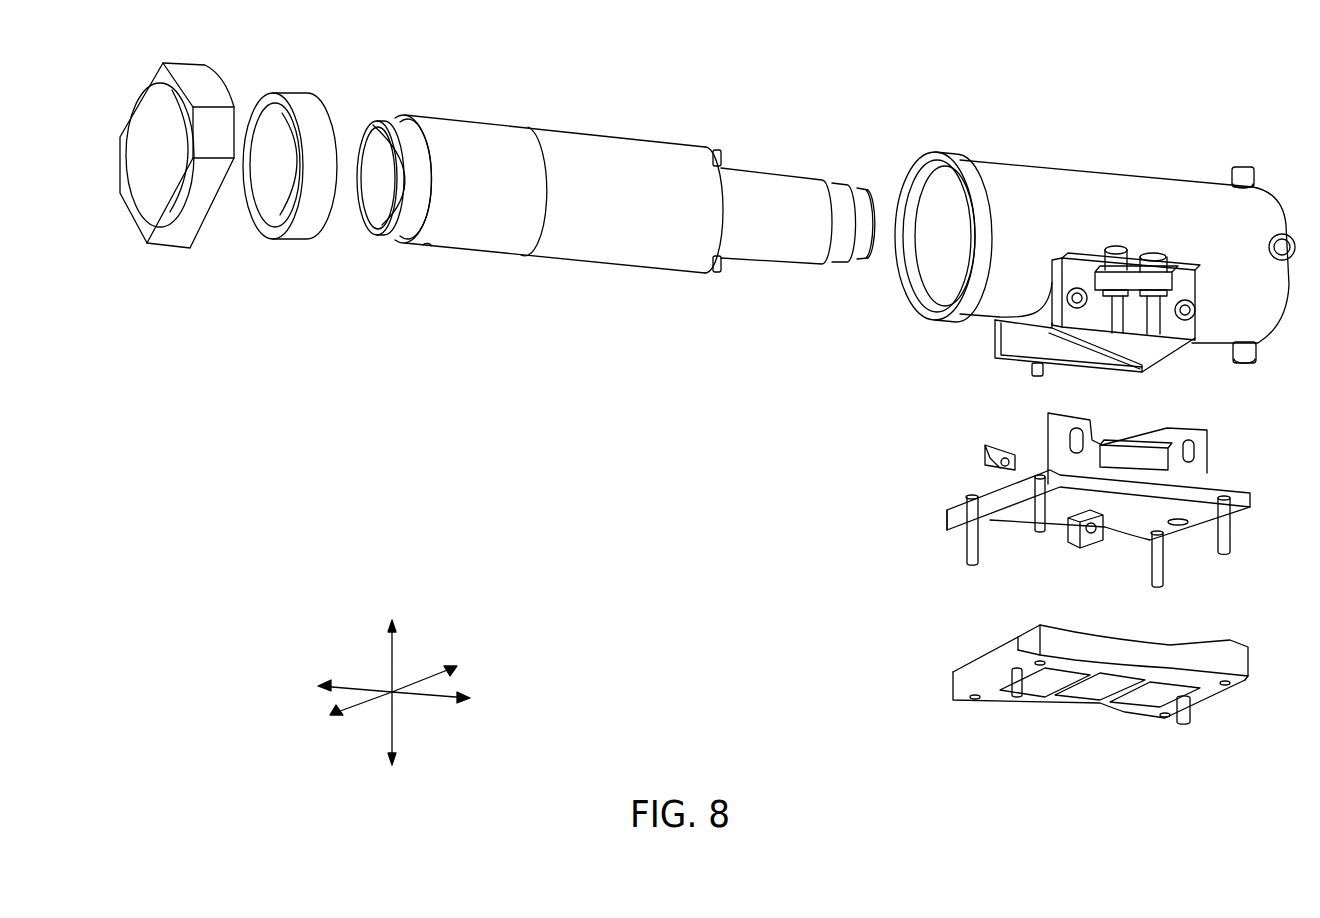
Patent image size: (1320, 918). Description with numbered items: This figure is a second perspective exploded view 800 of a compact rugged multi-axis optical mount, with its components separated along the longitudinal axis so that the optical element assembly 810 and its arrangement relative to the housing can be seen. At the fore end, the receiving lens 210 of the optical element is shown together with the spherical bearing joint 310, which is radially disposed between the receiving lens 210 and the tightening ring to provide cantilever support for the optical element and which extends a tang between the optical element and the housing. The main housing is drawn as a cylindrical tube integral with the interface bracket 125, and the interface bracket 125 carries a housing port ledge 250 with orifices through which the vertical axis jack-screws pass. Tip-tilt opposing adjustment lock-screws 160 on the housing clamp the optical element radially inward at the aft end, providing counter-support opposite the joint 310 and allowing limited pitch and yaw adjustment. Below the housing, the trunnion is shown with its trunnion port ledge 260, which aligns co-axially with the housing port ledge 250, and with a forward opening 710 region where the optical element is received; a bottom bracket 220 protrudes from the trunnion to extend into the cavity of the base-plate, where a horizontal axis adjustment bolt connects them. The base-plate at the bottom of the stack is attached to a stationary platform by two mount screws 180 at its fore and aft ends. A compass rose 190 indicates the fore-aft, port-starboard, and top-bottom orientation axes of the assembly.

The second perspective exploded view 800 is at (262, 362).
The lens tube 810 is at (604, 149).
The receiving lens 210 is at (376, 135).
The spherical bearing joint 310 is at (320, 233).
The interface bracket 125 is at (1092, 264).
The housing port ledge 250 is at (1095, 277).
The tip-tilt opposing adjustment lock-screws 160 is at (1232, 165).
The trunnion port ledge 260 is at (1102, 491).
The forward opening 710 is at (1195, 450).
The bottom bracket 220 is at (1068, 540).
The mount screws 180 is at (1192, 710).
The compass rose 190 is at (426, 579).